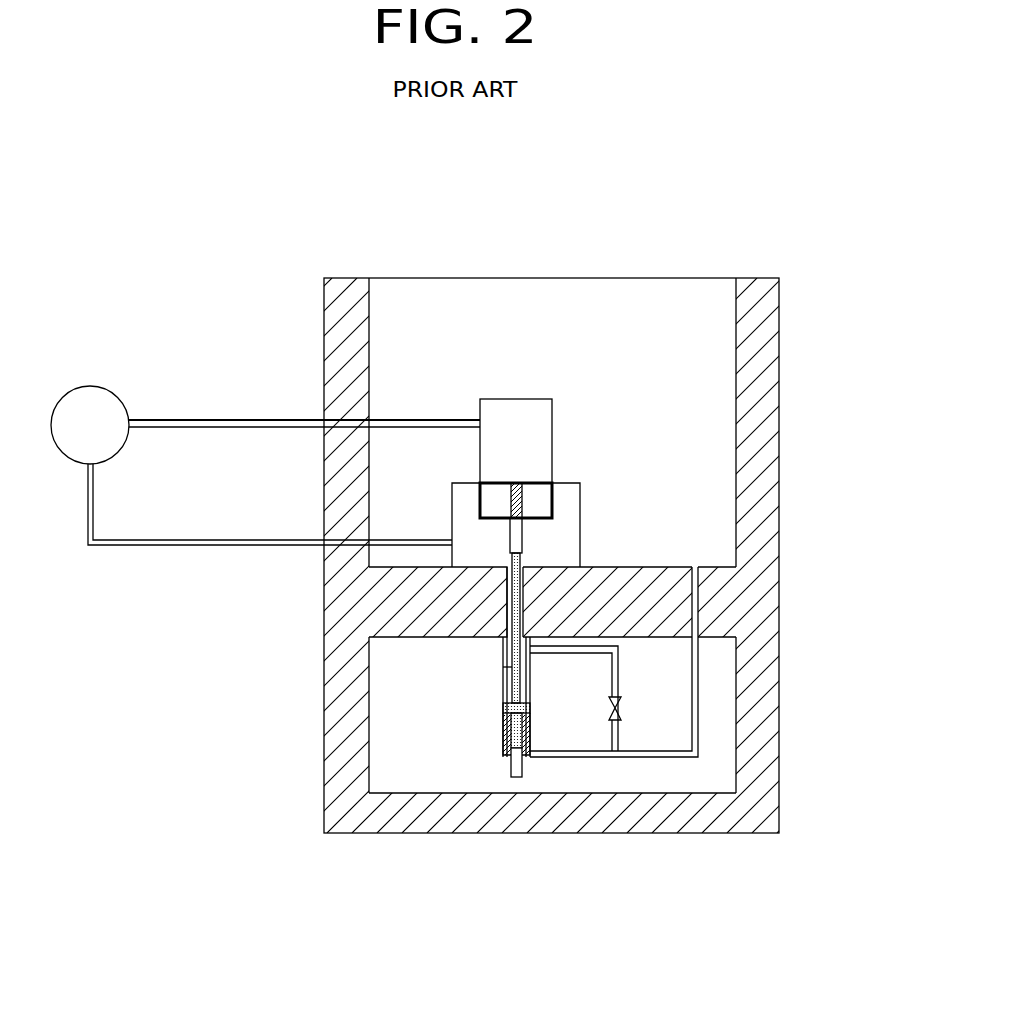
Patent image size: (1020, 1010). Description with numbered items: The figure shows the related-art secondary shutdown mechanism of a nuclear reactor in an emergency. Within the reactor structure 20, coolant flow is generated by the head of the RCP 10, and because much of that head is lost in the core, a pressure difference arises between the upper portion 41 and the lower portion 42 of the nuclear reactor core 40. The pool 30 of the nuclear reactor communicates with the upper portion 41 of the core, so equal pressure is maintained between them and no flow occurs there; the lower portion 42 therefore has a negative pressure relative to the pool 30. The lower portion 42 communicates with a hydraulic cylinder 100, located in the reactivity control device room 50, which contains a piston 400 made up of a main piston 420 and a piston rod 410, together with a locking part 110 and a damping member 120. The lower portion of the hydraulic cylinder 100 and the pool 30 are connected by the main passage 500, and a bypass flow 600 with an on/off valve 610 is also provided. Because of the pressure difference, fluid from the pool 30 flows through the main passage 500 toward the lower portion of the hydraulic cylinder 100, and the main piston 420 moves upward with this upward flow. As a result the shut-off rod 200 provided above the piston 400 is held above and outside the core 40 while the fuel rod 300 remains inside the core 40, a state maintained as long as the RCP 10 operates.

The RCP 10 is at (90, 383).
The reactor structure 20 is at (639, 401).
The pool of the nuclear reactor 30 is at (680, 319).
The upper portion 41 is at (547, 452).
The nuclear reactor core 40 is at (653, 377).
The lower portion 42 is at (575, 523).
The shut-off rod 200 is at (516, 483).
The fuel rod 300 is at (521, 551).
The piston 400 is at (702, 616).
The main piston 420 is at (523, 582).
The piston rod 410 is at (522, 665).
The reactivity control device room 50 is at (737, 751).
The hydraulic cylinder 100 is at (390, 697).
The locking part 110 is at (505, 664).
The damping member 120 is at (503, 757).
The main passage 500 is at (682, 757).
The bypass flow 600 is at (686, 698).
The on/off valve 610 is at (620, 702).